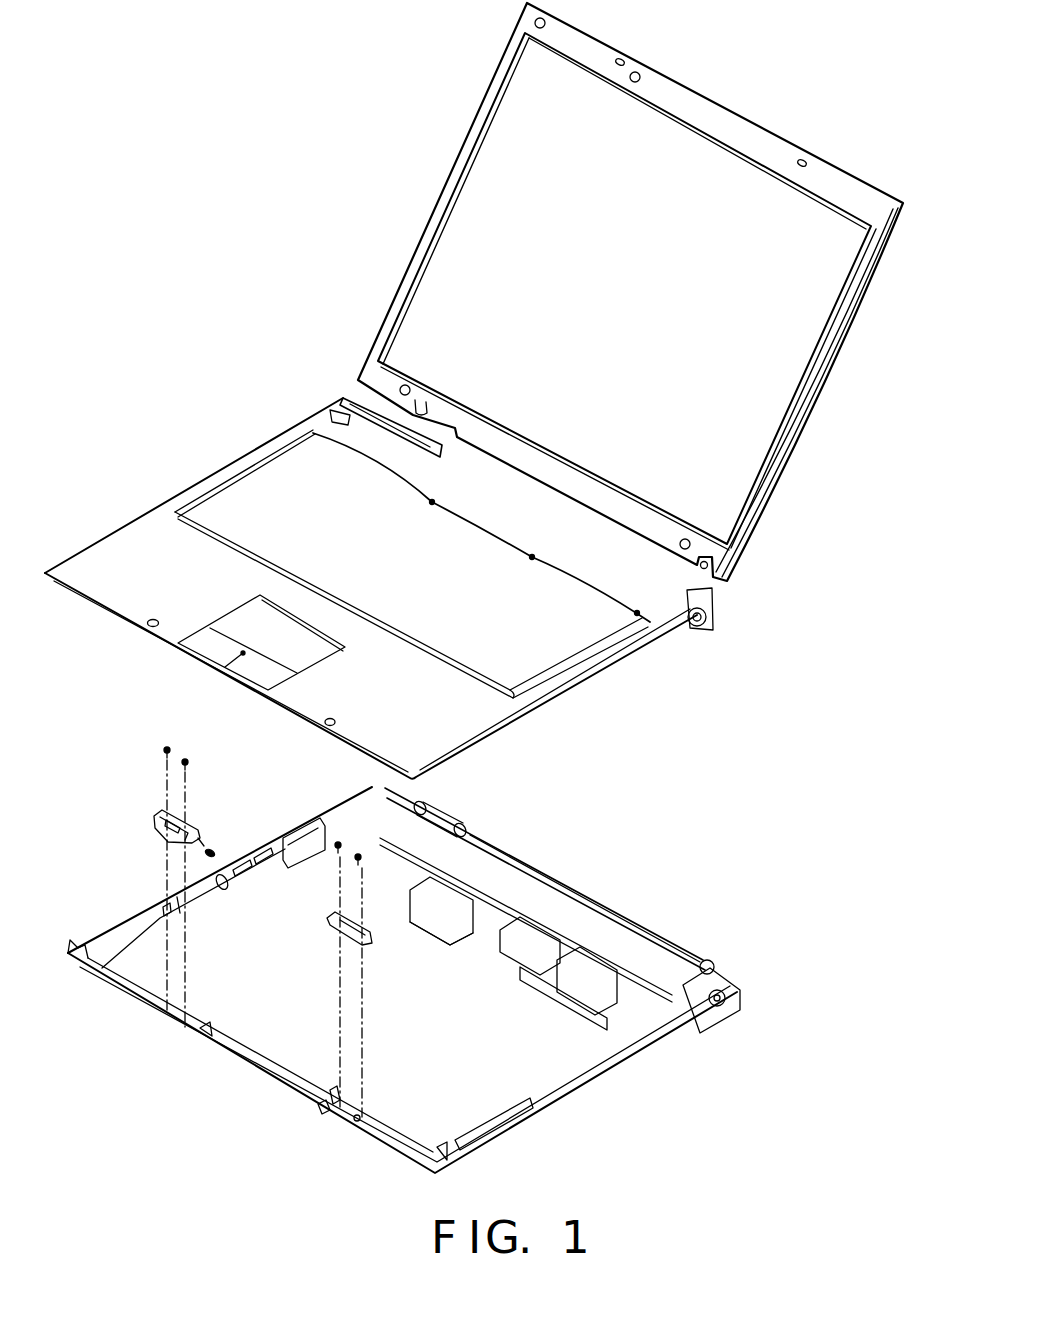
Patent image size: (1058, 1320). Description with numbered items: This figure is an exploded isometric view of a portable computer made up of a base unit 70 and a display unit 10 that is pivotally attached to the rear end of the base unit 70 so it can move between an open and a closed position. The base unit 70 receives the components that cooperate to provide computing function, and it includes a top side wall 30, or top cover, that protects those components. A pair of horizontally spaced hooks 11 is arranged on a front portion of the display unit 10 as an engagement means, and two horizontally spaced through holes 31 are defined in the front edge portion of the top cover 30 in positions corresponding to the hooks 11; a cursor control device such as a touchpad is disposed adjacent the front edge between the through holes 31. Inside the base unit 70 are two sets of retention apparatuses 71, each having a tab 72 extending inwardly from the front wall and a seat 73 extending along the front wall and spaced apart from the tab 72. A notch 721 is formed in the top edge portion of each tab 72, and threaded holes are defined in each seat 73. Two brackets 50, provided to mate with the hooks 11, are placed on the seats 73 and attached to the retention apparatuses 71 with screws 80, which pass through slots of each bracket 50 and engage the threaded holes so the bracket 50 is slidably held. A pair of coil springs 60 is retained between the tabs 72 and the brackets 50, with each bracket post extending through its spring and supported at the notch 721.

The display unit 10 is at (448, 158).
The hooks 11 is at (623, 60).
The top side wall 30 is at (236, 453).
The through holes 31 is at (151, 617).
The brackets 50 is at (158, 816).
The coil springs 60 is at (208, 847).
The base unit 70 is at (580, 879).
The retention apparatuses 71 is at (290, 1193).
The tab 72 is at (321, 1107).
The notch 721 is at (333, 1095).
The seat 73 is at (357, 1122).
The screws 80 is at (164, 745).